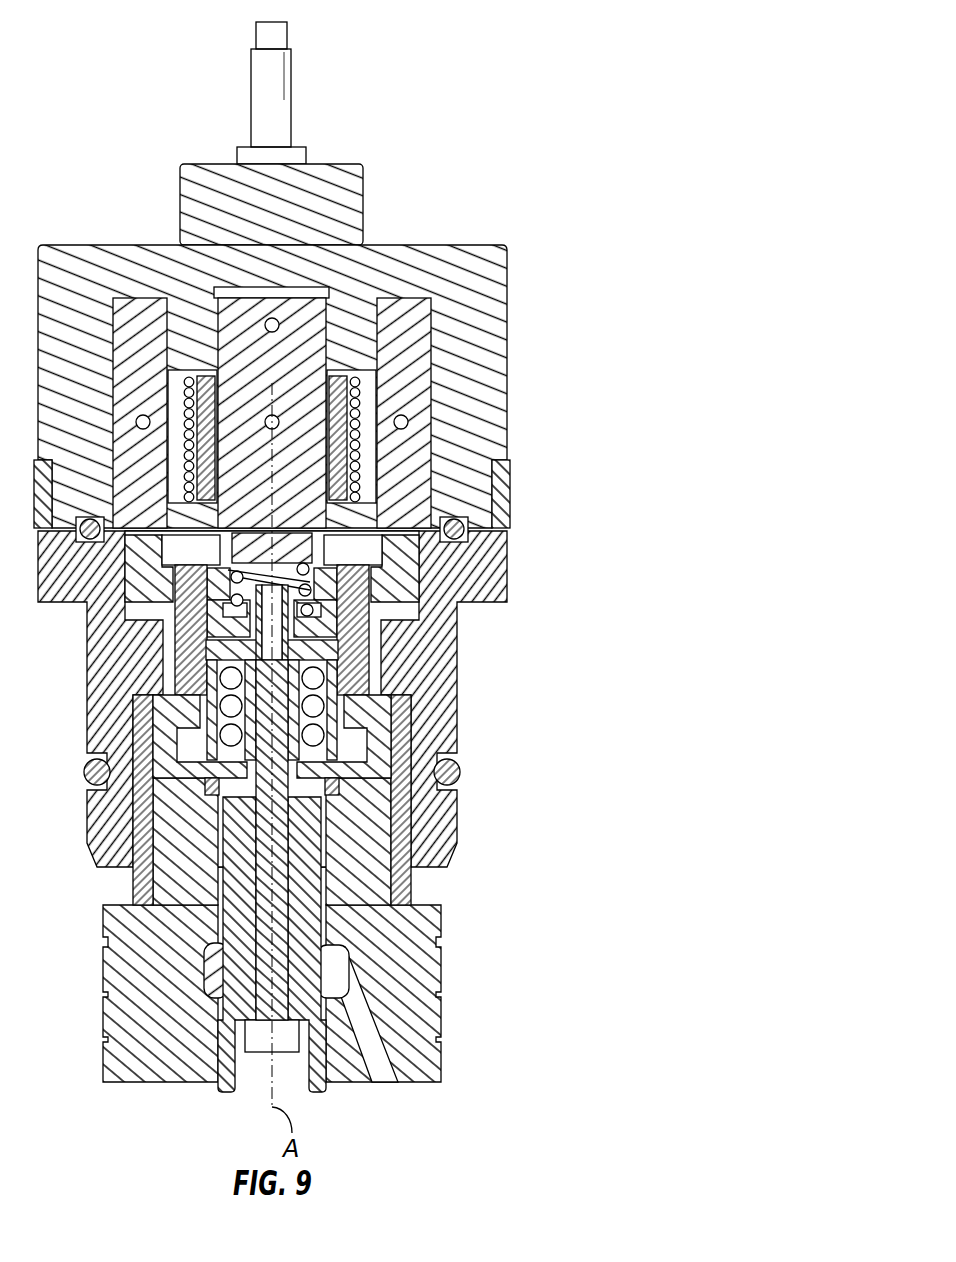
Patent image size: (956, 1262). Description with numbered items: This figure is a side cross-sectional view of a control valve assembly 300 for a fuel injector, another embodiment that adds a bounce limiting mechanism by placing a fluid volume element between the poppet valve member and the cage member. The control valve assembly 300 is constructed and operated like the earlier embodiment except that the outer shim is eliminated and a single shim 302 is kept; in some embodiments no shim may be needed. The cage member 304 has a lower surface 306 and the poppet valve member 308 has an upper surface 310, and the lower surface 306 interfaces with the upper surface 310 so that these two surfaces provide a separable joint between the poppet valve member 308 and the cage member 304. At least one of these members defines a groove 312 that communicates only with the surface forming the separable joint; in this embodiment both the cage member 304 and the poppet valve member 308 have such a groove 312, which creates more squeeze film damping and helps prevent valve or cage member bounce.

The control valve assembly 300 is at (524, 56).
The shim 302 is at (333, 787).
The cage member 304 is at (337, 668).
The lower surface 306 is at (340, 757).
The poppet valve member 308 is at (323, 910).
The upper surface 310 is at (308, 908).
The groove 312 is at (222, 823).